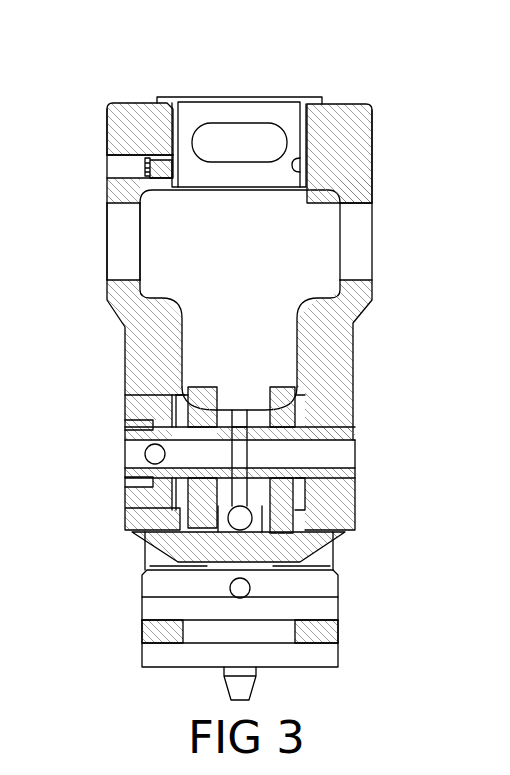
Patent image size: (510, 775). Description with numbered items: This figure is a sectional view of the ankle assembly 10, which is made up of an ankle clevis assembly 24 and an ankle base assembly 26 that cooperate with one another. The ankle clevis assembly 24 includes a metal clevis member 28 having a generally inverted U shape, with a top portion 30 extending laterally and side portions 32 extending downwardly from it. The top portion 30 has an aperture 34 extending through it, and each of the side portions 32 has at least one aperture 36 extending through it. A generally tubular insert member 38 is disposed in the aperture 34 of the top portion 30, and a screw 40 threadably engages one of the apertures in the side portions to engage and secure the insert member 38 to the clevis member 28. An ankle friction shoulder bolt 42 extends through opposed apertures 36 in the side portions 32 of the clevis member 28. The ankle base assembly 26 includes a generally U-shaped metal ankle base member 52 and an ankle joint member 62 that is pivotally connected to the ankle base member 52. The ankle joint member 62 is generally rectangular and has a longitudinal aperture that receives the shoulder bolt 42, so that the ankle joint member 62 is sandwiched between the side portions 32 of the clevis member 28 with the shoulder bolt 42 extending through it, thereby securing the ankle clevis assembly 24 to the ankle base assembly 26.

The ankle assembly 10 is at (430, 152).
The ankle clevis assembly 24 is at (98, 298).
The ankle base assembly 26 is at (342, 584).
The clevis member 28 is at (108, 108).
The top portion 30 is at (356, 104).
The side portions 32 is at (145, 333).
The aperture 34 is at (300, 165).
The aperture 36 is at (126, 205).
The insert member 38 is at (305, 103).
The screw 40 is at (140, 176).
The ankle friction shoulder bolt 42 is at (133, 498).
The ankle base member 52 is at (210, 655).
The ankle joint member 62 is at (290, 392).